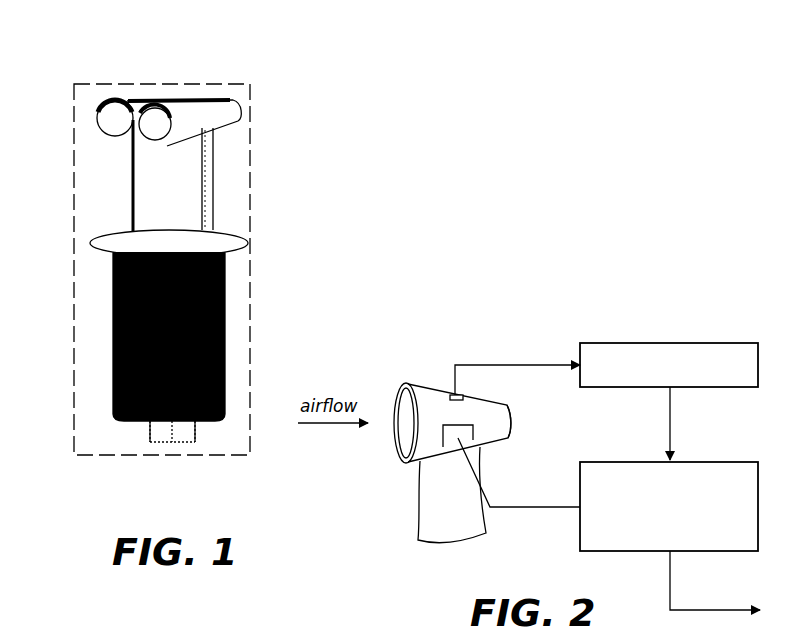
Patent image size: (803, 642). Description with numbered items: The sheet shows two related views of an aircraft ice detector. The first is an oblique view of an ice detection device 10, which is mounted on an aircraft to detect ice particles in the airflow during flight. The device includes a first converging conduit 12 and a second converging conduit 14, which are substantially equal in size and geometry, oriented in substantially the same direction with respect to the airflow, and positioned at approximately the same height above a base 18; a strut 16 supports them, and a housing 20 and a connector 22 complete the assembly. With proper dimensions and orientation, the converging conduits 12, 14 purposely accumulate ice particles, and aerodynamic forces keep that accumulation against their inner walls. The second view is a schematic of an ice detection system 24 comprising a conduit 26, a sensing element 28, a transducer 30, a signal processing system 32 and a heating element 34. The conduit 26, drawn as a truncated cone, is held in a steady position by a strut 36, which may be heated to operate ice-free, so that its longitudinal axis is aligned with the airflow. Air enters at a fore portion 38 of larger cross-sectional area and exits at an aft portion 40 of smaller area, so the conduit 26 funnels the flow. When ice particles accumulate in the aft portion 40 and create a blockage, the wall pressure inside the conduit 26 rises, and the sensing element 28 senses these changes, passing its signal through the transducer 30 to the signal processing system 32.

In FIG. 1, the ice detection device 10 is at (297, 211).
In FIG. 1, the first converging conduit 12 is at (112, 100).
In FIG. 1, the second converging conduit 14 is at (200, 115).
In FIG. 1, the strut 16 is at (148, 180).
In FIG. 1, the base 18 is at (90, 244).
In FIG. 1, the housing 20 is at (112, 323).
In FIG. 1, the connector 22 is at (150, 434).
In FIG. 2, the ice detection system 24 is at (600, 311).
In FIG. 2, the conduit 26 is at (426, 384).
In FIG. 2, the sensing element 28 is at (452, 394).
In FIG. 2, the transducer 30 is at (706, 343).
In FIG. 2, the signal processing system 32 is at (714, 462).
In FIG. 2, the heating element 34 is at (463, 433).
In FIG. 2, the strut 36 is at (440, 492).
In FIG. 2, the fore portion 38 is at (403, 390).
In FIG. 2, the aft portion 40 is at (503, 406).